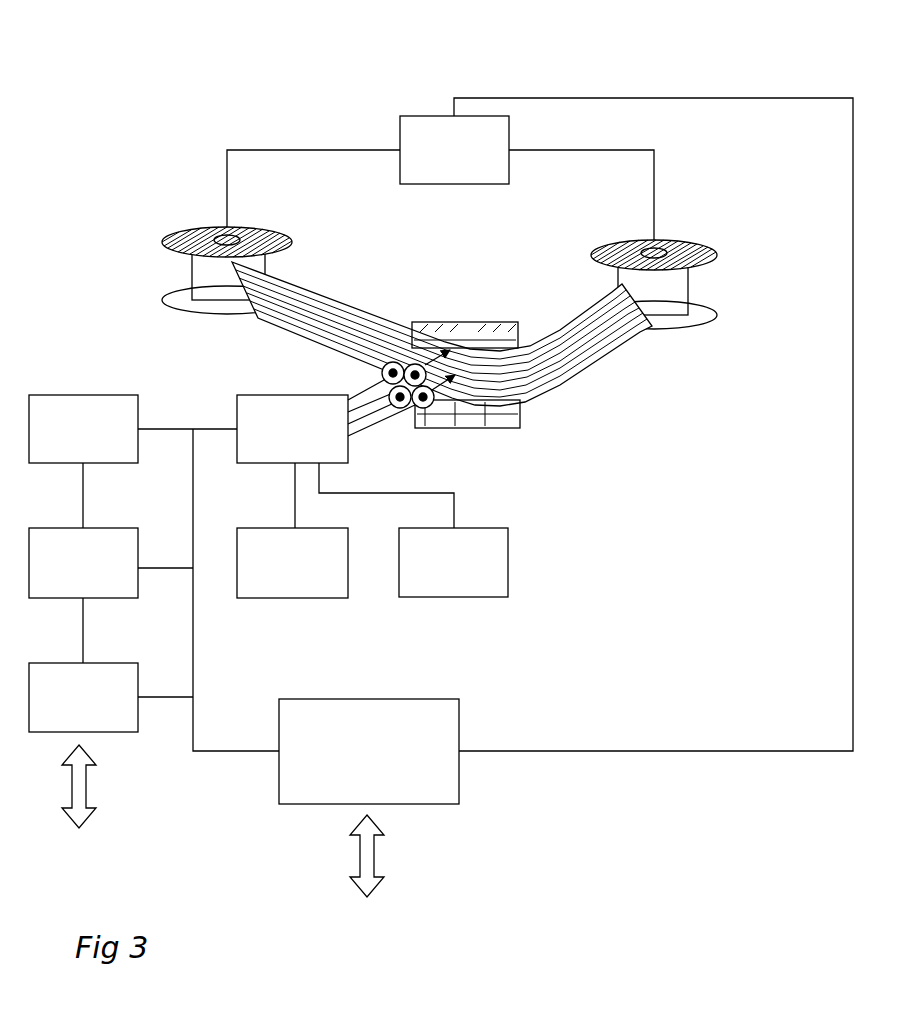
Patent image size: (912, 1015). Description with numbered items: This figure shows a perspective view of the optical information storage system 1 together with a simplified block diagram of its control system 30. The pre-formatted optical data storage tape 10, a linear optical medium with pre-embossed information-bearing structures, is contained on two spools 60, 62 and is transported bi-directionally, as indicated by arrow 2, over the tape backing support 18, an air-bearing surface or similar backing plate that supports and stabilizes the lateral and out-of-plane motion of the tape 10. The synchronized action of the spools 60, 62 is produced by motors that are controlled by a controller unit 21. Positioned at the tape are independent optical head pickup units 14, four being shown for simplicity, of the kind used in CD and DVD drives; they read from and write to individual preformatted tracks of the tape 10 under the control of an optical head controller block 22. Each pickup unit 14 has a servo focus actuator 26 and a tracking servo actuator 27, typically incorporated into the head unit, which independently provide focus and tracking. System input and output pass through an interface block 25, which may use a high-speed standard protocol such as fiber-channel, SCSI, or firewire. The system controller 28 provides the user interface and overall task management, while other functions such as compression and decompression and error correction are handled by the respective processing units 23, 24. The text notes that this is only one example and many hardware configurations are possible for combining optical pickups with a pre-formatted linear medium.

The optical information storage system 1 is at (286, 102).
The arrow 2 is at (315, 279).
The pre-formatted optical data storage tape 10 is at (595, 342).
The optical head pickup unit 14 is at (455, 383).
The backing plate 18 is at (467, 328).
The controller unit 21 is at (454, 150).
The optical head controller block 22 is at (326, 419).
The processing unit 23 is at (83, 429).
The processing unit 24 is at (83, 563).
The interface block 25 is at (83, 745).
The servo focus actuator 26 is at (292, 563).
The tracking servo actuator 27 is at (453, 562).
The system controller 28 is at (369, 798).
The control system 30 is at (531, 795).
The spool 60 is at (177, 272).
The spool 62 is at (702, 295).